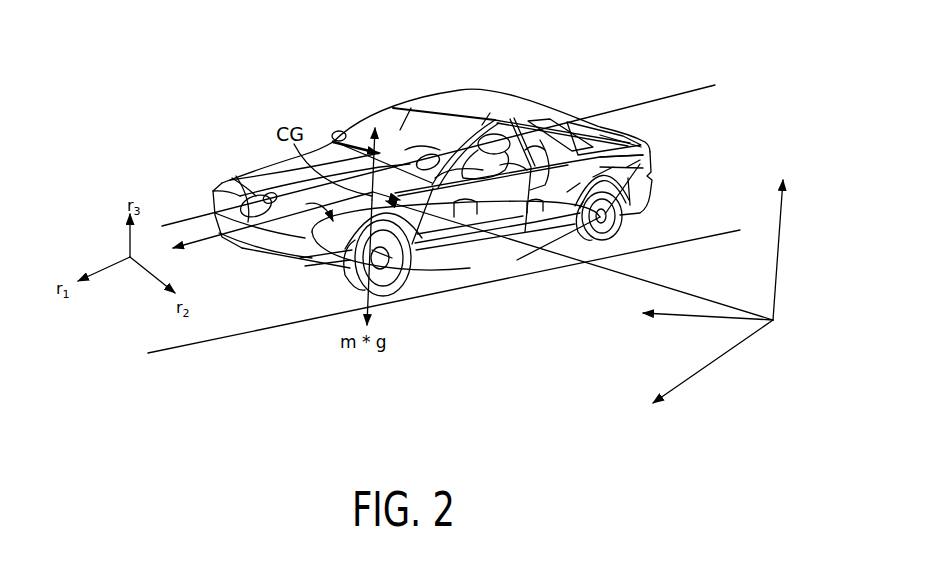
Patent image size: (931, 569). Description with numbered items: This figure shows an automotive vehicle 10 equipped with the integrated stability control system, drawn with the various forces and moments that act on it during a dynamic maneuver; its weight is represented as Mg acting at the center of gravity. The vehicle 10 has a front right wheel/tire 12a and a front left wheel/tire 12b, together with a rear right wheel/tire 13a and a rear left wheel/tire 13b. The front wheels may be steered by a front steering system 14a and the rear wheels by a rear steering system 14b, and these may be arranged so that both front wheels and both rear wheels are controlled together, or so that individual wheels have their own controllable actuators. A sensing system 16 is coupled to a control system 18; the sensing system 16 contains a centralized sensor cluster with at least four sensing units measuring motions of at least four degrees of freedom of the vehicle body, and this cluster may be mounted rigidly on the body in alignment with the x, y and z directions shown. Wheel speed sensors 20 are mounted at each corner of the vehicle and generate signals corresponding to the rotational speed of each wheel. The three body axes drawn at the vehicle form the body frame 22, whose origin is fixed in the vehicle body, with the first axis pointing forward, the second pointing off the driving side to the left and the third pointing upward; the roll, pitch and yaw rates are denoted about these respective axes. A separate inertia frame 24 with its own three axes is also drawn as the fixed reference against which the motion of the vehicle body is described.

The automotive vehicle 10 is at (448, 96).
The front right wheel/tire 12a is at (242, 173).
The front left wheel/tire 12b is at (403, 291).
The rear right wheel/tire 13a is at (490, 113).
The rear left wheel/tire 13b is at (623, 230).
The front steering system 14a is at (372, 258).
The rear steering system 14b is at (657, 160).
The sensing system 16 is at (411, 108).
The control system 18 is at (532, 152).
The wheel speed sensors 20 is at (517, 260).
The body frame 22 is at (213, 238).
The inertia frame 24 is at (775, 322).